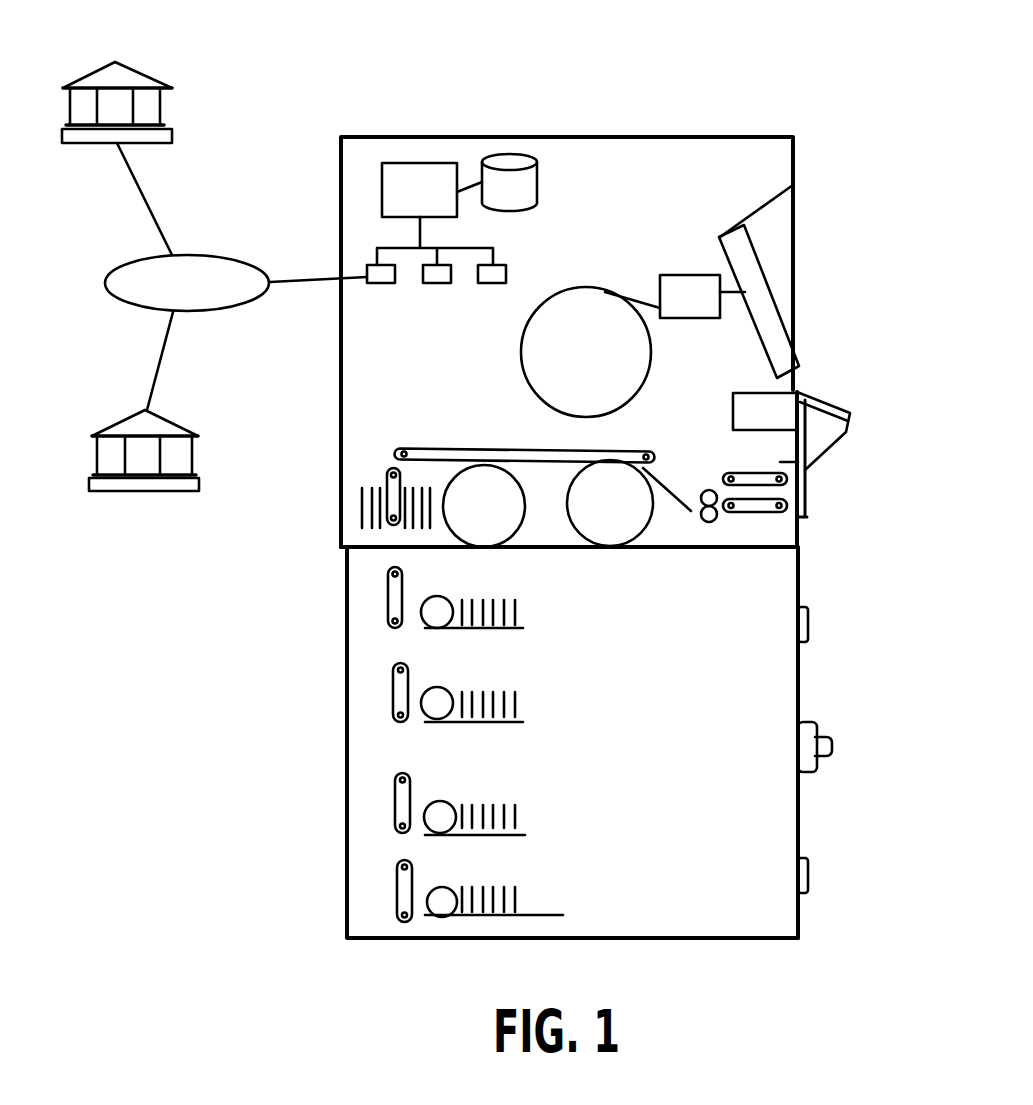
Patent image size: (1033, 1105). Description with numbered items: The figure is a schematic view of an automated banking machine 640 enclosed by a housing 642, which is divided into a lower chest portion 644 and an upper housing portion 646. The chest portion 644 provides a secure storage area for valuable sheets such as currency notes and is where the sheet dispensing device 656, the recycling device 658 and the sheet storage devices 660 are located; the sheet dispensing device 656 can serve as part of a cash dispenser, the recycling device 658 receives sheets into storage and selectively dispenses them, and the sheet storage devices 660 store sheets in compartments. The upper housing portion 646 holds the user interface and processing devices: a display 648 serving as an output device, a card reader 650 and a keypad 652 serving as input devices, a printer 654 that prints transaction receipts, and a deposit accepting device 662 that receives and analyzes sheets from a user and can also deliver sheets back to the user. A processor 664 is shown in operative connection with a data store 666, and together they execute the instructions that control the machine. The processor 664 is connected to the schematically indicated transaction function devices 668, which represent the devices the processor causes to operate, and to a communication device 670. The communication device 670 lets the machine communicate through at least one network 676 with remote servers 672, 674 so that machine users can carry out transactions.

The automated banking machine 640 is at (843, 132).
The housing 642 is at (799, 826).
The chest portion 644 is at (347, 640).
The upper housing portion 646 is at (341, 444).
The display 648 is at (770, 278).
The card reader 650 is at (798, 372).
The keypad 652 is at (835, 397).
The printer 654 is at (678, 275).
The sheet dispensing device 656 is at (521, 617).
The recycling device 658 is at (522, 704).
The sheet storage devices 660 is at (362, 507).
The deposit accepting device 662 is at (760, 534).
The processor 664 is at (411, 162).
The data store 666 is at (512, 155).
The transaction function devices 668 is at (420, 294).
The communication device 670 is at (378, 284).
The remote server 672 is at (163, 100).
The remote server 674 is at (193, 428).
The network 676 is at (198, 256).